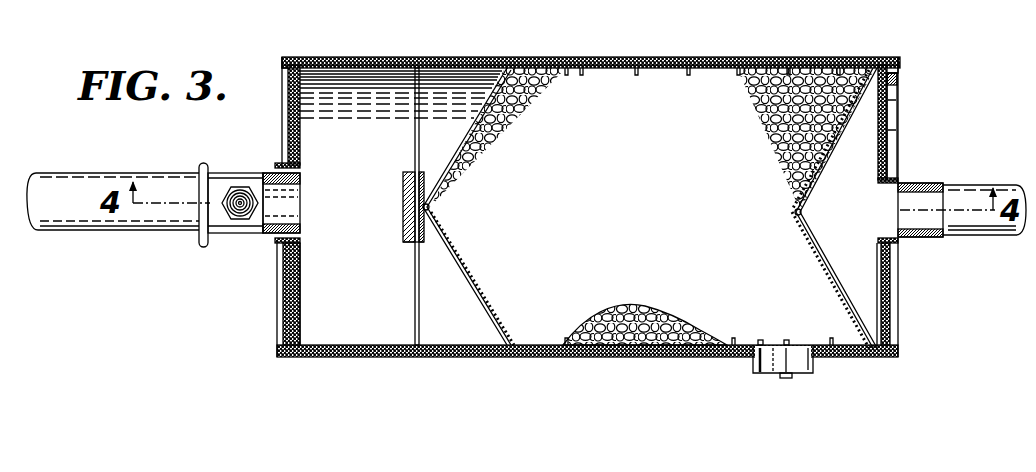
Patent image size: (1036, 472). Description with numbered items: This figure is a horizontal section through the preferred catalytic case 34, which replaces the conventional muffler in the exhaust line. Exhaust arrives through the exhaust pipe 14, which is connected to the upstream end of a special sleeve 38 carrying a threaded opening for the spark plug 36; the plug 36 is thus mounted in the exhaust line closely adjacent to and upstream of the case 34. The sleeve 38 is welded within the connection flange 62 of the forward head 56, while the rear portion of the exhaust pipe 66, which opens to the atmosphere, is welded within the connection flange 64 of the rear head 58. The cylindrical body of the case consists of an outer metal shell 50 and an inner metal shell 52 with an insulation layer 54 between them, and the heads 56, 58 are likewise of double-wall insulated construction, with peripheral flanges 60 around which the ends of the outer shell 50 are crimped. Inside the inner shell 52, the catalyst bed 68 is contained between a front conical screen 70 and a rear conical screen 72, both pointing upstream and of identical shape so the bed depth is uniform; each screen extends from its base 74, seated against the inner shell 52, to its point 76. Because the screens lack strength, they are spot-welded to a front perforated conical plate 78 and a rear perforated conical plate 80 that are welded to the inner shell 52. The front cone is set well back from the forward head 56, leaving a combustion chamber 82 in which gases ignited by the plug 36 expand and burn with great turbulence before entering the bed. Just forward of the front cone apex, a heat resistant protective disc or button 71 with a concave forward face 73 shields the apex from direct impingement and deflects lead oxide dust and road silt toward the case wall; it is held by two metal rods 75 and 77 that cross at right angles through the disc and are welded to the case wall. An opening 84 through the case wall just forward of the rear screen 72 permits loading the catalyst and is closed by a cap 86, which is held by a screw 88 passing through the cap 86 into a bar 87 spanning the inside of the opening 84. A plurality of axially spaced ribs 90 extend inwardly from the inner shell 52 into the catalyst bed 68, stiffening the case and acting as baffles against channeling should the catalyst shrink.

The exhaust pipe 14 is at (113, 232).
The catalytic case 34 is at (472, 53).
The spark plug 36 is at (240, 215).
The sleeve 38 is at (233, 178).
The outer metal shell 50 is at (388, 57).
The inner metal shell 52 is at (366, 70).
The insulation layer 54 is at (348, 57).
The forward head 56 is at (295, 130).
The rear head 58 is at (892, 130).
The peripheral flanges 60 is at (290, 62).
The connection flange 62 is at (280, 163).
The connection flange 64 is at (905, 182).
The rear portion of the exhaust pipe 66 is at (965, 186).
The catalyst bed 68 is at (735, 110).
The front conical screen 70 is at (461, 253).
The protective disc or button 71 is at (409, 243).
The rear conical screen 72 is at (821, 263).
The concave forward face 73 is at (403, 221).
The base 74 is at (512, 345).
The metal rod 75 is at (415, 297).
The point 76 is at (432, 212).
The metal rod 77 is at (408, 206).
The front perforated conical plate 78 is at (470, 269).
The rear perforated conical plate 80 is at (816, 249).
The combustion chamber 82 is at (352, 322).
The opening 84 is at (762, 371).
The cap 86 is at (812, 371).
The bar 87 is at (768, 350).
The screw 88 is at (790, 350).
The ribs 90 is at (637, 73).